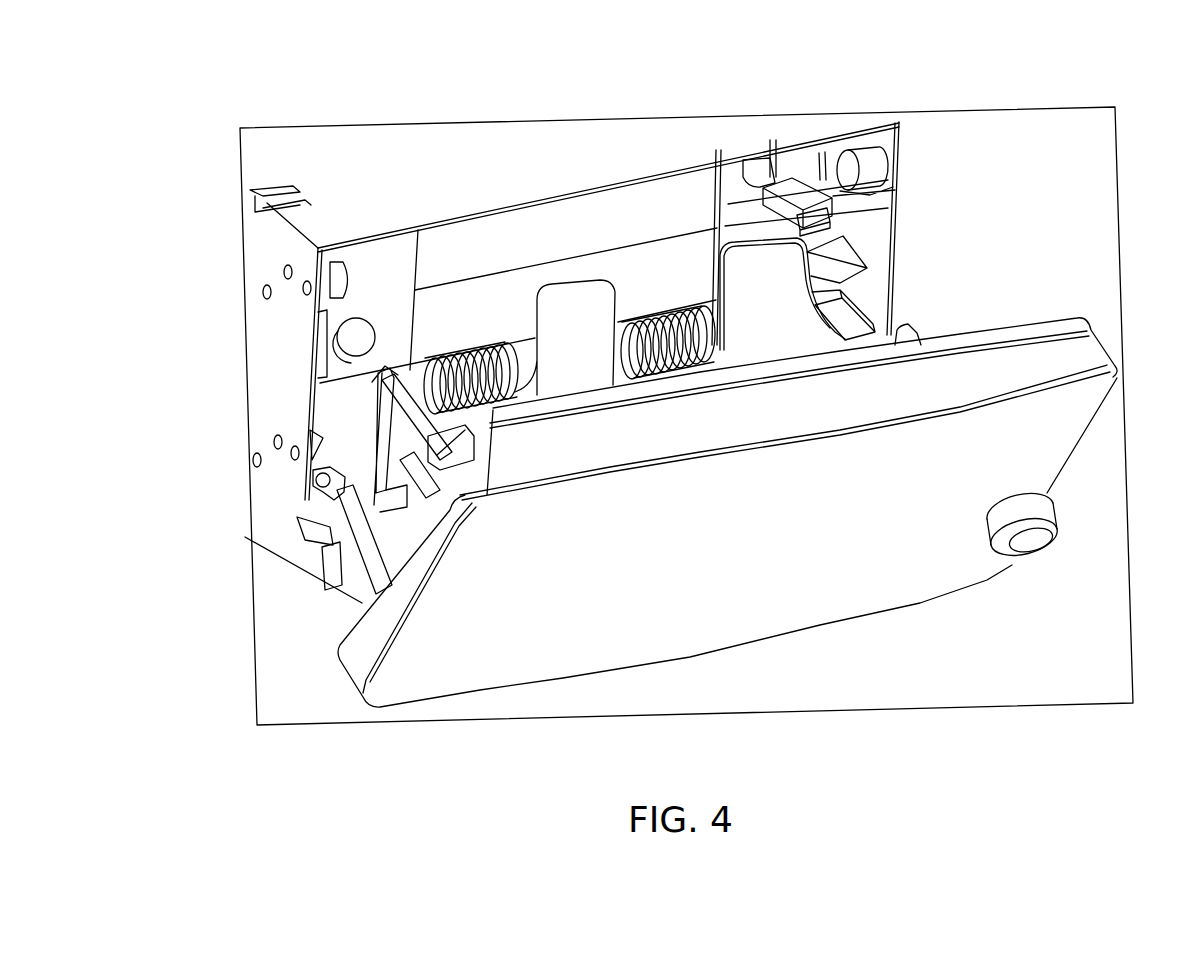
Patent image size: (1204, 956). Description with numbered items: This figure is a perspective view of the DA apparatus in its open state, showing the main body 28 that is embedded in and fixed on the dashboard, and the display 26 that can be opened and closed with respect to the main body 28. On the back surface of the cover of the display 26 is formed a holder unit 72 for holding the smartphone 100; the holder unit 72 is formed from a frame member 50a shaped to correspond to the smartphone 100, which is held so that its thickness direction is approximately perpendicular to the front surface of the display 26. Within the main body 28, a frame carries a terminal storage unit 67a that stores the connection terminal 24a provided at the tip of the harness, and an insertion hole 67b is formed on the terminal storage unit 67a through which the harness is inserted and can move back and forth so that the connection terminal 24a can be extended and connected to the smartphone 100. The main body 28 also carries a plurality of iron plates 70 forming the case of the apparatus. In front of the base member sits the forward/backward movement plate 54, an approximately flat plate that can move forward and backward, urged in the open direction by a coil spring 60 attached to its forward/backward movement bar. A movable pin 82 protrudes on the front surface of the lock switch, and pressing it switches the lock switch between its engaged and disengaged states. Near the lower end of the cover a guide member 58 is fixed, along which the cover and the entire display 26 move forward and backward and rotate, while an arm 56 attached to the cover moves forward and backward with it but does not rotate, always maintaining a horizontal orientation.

The main body 28 is at (533, 158).
The connection terminal 24a is at (880, 212).
The forward/backward movement plate 54 is at (800, 322).
The terminal storage unit 67a is at (727, 178).
The insertion hole 67b is at (793, 175).
The movable pin 82 is at (357, 330).
The coil spring 60 is at (485, 386).
The iron plates 70 is at (270, 542).
The frame member 50a is at (425, 440).
The holder unit 72 is at (425, 440).
The guide member 58 is at (325, 565).
The arm 56 is at (345, 580).
The display 26 is at (1080, 402).
The smartphone 100 is at (545, 412).